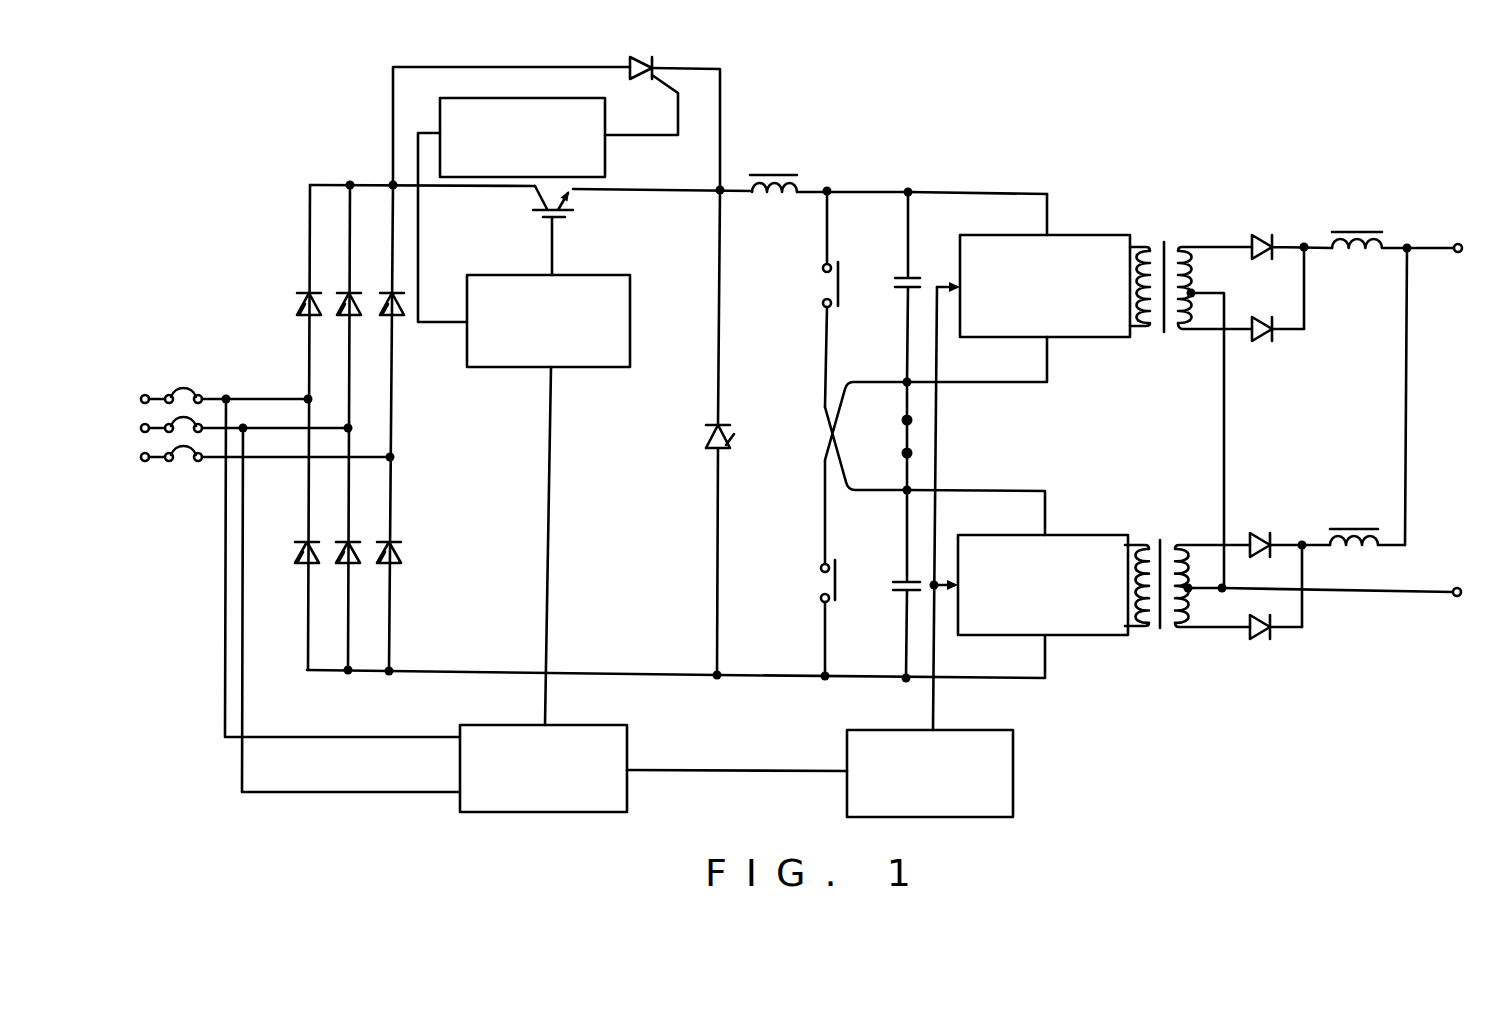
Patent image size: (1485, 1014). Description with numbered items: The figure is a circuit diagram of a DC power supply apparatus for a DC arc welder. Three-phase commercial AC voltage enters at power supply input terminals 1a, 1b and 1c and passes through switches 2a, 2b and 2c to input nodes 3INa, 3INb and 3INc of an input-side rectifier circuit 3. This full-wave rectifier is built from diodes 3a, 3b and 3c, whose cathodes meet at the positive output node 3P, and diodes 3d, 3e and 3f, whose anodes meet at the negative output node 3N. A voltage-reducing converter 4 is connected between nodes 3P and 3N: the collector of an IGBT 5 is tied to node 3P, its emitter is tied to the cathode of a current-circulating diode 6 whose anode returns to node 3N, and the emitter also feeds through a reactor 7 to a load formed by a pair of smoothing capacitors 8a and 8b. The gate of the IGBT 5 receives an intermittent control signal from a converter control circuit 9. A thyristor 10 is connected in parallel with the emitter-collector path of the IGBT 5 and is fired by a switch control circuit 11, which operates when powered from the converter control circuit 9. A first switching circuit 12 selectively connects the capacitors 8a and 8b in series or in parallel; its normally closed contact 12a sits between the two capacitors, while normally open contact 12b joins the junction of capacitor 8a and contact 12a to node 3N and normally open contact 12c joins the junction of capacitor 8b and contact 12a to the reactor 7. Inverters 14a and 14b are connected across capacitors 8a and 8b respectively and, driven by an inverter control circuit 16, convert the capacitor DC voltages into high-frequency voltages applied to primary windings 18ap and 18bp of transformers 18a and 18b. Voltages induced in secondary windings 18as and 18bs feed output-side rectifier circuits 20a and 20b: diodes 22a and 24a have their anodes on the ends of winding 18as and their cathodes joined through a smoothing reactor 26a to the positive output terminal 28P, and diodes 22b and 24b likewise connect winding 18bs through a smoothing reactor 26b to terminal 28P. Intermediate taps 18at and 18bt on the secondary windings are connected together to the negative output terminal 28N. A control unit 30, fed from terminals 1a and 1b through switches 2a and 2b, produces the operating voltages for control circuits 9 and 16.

The power supply input terminal 1a is at (146, 394).
The power supply input terminal 1b is at (147, 432).
The power supply input terminal 1c is at (147, 462).
The switch 2a is at (190, 392).
The switch 2b is at (200, 422).
The switch 2c is at (183, 455).
The input-side rectifier circuit 3 is at (322, 165).
The positive output node 3P is at (391, 183).
The negative output node 3N is at (393, 668).
The input node 3INa is at (306, 396).
The input node 3INb is at (352, 427).
The input node 3INc is at (393, 457).
The diode 3a is at (299, 301).
The diode 3b is at (339, 299).
The diode 3c is at (382, 299).
The diode 3d is at (298, 553).
The diode 3e is at (339, 553).
The diode 3f is at (380, 553).
The voltage-reducing converter 4 is at (748, 151).
The IGBT 5 is at (533, 206).
The current-circulating diode 6 is at (724, 430).
The reactor 7 is at (778, 201).
The smoothing capacitor 8a is at (896, 283).
The smoothing capacitor 8b is at (893, 586).
The converter control circuit 9 is at (606, 277).
The thyristor 10 is at (649, 85).
The switch control circuit 11 is at (597, 157).
The first switching circuit 12 is at (806, 432).
The normally closed contact 12a is at (916, 437).
The normally open contact 12b is at (823, 578).
The normally open contact 12c is at (820, 287).
The inverter 14a is at (1092, 238).
The inverter 14b is at (1012, 535).
The inverter control circuit 16 is at (1013, 753).
The transformer 18a is at (1203, 237).
The primary winding 18ap is at (1134, 328).
The secondary winding 18as is at (1193, 310).
The intermediate tap 18at is at (1192, 290).
The transformer 18b is at (1170, 539).
The primary winding 18bp is at (1133, 627).
The secondary winding 18bs is at (1192, 612).
The intermediate tap 18bt is at (1189, 582).
The output-side rectifier circuit 20a is at (1367, 359).
The output-side rectifier circuit 20b is at (1360, 667).
The diode 22a is at (1258, 240).
The diode 22b is at (1257, 533).
The diode 24a is at (1257, 320).
The diode 24b is at (1255, 633).
The smoothing reactor 26a is at (1358, 260).
The smoothing reactor 26b is at (1372, 551).
The positive output terminal 28P is at (1459, 254).
The negative output terminal 28N is at (1457, 597).
The control unit 30 is at (627, 745).